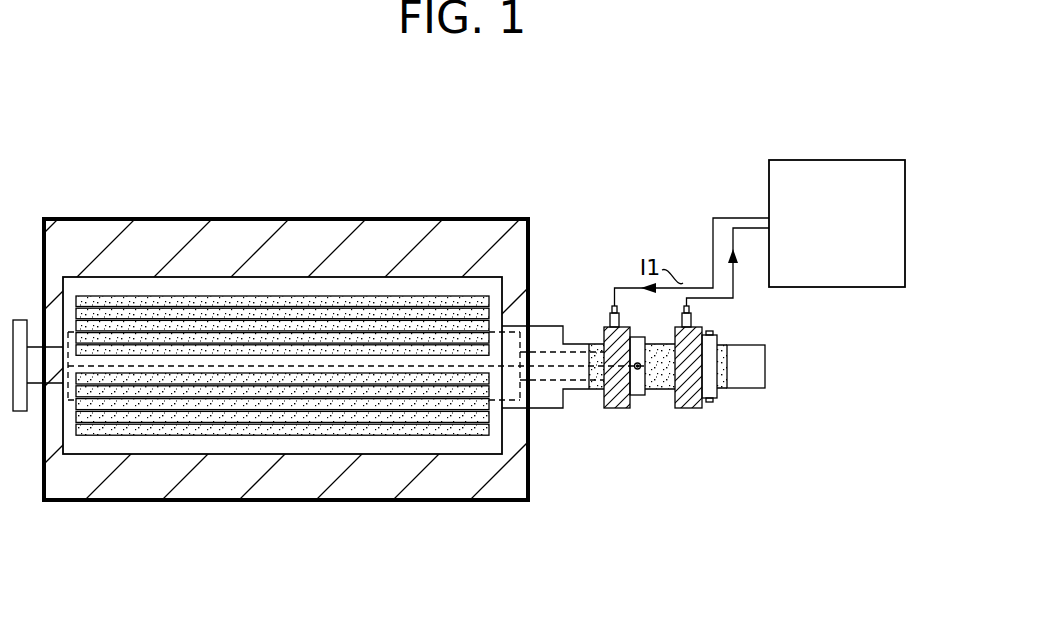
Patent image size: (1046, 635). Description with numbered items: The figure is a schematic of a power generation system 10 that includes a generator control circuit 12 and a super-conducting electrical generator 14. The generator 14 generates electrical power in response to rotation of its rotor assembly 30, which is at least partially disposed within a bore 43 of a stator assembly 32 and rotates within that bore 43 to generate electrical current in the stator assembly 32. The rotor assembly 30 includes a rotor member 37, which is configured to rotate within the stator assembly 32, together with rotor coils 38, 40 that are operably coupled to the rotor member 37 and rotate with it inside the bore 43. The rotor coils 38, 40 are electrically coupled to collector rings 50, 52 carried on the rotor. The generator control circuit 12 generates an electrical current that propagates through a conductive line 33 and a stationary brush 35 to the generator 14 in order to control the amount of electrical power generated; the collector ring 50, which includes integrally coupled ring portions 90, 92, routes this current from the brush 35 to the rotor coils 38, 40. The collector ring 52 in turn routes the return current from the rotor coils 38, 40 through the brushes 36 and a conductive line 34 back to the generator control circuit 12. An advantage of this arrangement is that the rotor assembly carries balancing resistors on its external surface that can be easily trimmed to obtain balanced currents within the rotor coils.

The power generation system 10 is at (594, 152).
The generator control circuit 12 is at (840, 160).
The super-conducting electrical generator 14 is at (246, 206).
The rotor assembly 30 is at (426, 292).
The stator assembly 32 is at (390, 218).
The conductive line 33 is at (741, 217).
The conductive line 34 is at (737, 288).
The stationary brush 35 is at (609, 320).
The brush 36 is at (681, 320).
The rotor member 37 is at (770, 339).
The rotor coil 38 is at (100, 297).
The rotor coil 40 is at (223, 432).
The bore 43 is at (276, 284).
The collector ring 50 is at (616, 416).
The collector ring 52 is at (687, 416).
The ring portion 90 is at (604, 407).
The ring portion 92 is at (638, 397).